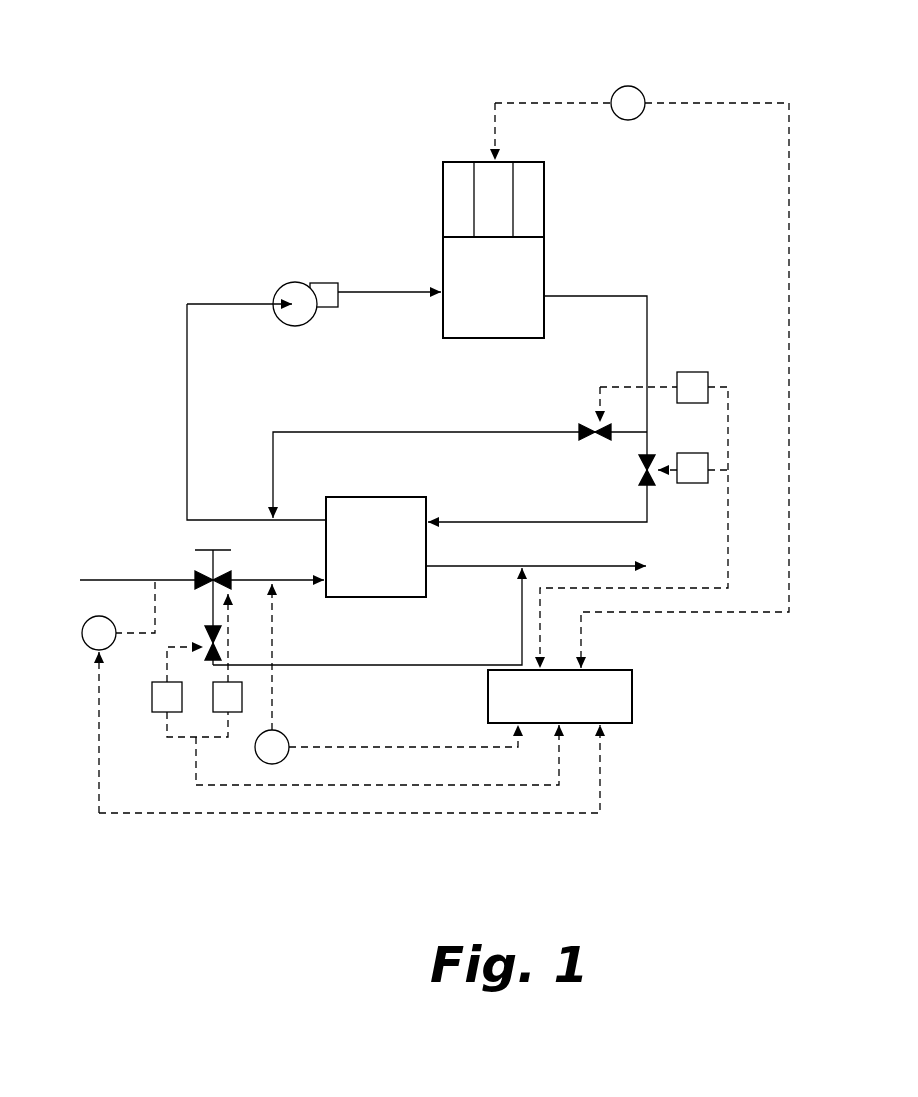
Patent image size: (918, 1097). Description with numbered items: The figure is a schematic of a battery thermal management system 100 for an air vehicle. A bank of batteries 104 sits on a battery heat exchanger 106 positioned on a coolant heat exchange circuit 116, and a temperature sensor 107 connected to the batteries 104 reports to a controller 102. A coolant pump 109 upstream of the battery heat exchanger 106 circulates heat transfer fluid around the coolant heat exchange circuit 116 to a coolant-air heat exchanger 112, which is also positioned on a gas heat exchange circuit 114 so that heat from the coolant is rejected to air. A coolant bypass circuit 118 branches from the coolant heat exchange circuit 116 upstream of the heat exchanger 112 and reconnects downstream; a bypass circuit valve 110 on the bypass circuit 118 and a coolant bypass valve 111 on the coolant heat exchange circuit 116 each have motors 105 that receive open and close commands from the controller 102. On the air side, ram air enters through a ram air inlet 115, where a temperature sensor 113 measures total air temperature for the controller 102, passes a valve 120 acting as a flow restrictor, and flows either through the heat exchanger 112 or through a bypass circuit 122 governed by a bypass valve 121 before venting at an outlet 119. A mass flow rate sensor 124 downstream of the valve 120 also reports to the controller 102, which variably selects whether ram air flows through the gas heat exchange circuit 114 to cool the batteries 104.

The battery thermal management system 100 is at (764, 66).
The controller 102 is at (640, 670).
The bank of batteries 104 is at (482, 168).
The motors 105 is at (708, 386).
The battery heat exchanger 106 is at (546, 320).
The temperature sensor 107 is at (637, 86).
The coolant pump 109 is at (323, 284).
The bypass circuit valve 110 is at (582, 428).
The coolant bypass valve 111 is at (644, 478).
The coolant-air heat exchanger 112 is at (378, 496).
The temperature sensor 113 is at (84, 630).
The gas heat exchange circuit 114 is at (488, 568).
The ram air inlet 115 is at (178, 576).
The coolant heat exchange circuit 116 is at (650, 346).
The coolant bypass circuit 118 is at (446, 430).
The outlet 119 is at (606, 564).
The valve 120 is at (226, 574).
The bypass valve 121 is at (206, 640).
The bypass circuit 122 is at (406, 662).
The mass flow rate sensor 124 is at (272, 730).